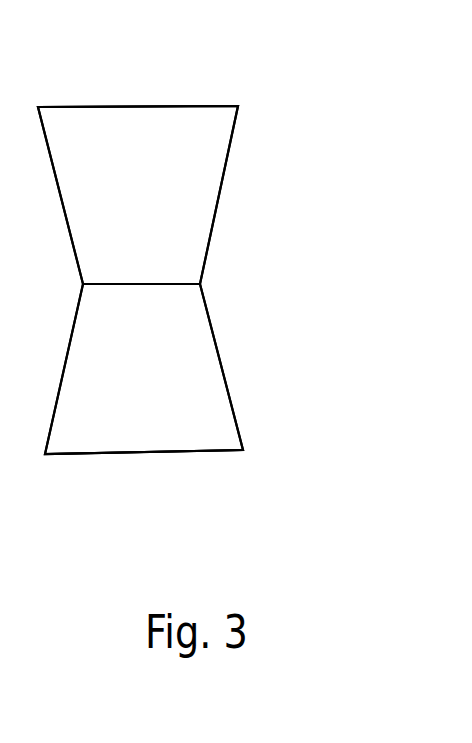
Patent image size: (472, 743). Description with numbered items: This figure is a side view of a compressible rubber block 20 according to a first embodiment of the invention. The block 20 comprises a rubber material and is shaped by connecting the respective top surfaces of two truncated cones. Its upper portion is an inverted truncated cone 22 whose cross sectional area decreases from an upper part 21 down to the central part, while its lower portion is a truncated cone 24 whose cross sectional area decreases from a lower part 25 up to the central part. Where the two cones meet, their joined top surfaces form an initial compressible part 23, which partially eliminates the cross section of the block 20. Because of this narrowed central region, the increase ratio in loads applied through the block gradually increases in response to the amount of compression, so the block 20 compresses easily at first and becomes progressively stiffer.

The compressible rubber block 20 is at (254, 105).
The upper part 21 is at (148, 106).
The inverted truncated cone 22 is at (194, 208).
The initial compressible part 23 is at (200, 284).
The truncated cone 24 is at (212, 367).
The lower part 25 is at (156, 455).